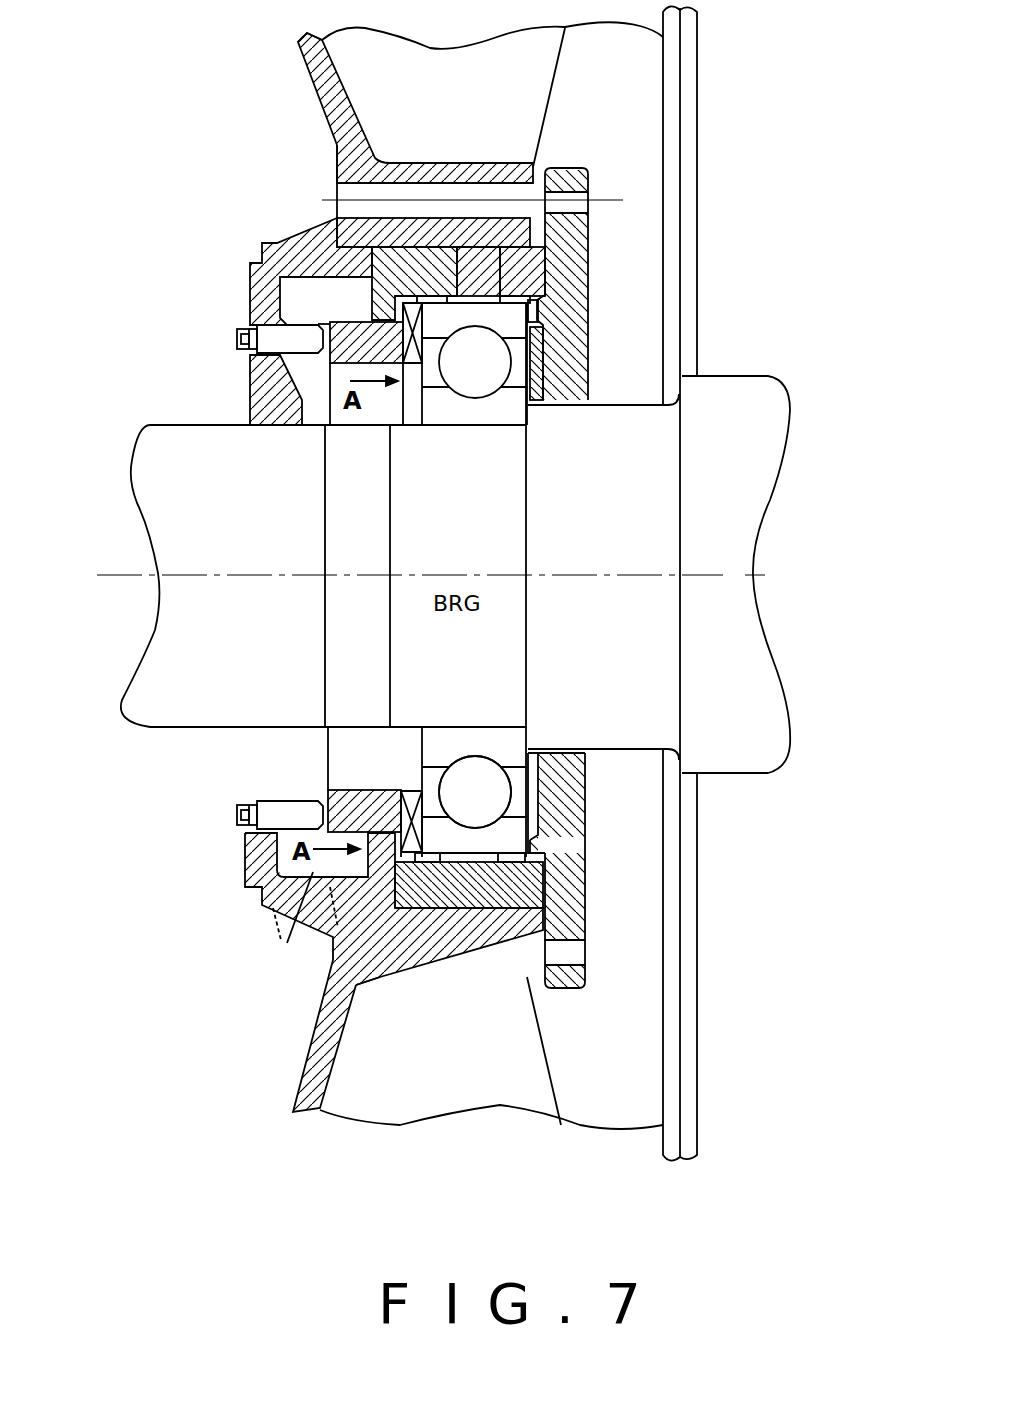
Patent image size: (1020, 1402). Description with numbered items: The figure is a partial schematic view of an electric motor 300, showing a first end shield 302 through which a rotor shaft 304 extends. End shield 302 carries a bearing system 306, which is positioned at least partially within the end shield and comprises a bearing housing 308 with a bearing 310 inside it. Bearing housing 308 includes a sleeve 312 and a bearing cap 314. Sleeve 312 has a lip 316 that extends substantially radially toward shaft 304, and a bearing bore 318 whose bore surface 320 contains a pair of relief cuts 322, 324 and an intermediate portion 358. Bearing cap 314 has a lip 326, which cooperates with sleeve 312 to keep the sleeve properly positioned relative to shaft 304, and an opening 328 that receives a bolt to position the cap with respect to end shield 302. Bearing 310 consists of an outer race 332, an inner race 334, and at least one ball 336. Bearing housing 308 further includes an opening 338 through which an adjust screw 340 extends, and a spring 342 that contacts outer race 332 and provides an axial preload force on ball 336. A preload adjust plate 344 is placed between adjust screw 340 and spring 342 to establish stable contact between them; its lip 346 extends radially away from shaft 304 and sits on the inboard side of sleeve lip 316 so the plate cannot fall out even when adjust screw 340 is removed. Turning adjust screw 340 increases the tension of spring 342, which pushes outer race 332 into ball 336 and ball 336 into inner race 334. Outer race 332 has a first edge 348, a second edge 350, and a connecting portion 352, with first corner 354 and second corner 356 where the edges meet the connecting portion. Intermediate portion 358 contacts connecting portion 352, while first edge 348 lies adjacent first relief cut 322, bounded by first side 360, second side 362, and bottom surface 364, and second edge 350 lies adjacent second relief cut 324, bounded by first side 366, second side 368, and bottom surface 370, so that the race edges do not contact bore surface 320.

The electric motor 300 is at (713, 147).
The first end shield 302 is at (588, 88).
The shaft 304 is at (208, 458).
The bearing system 306 is at (363, 243).
The bearing housing 308 is at (358, 170).
The bearing 310 is at (508, 405).
The sleeve 312 is at (432, 230).
The bearing cap 314 is at (590, 298).
The lip 316 is at (377, 312).
The bearing bore 318 is at (560, 322).
The bore surface 320 is at (548, 340).
The first relief cut 322 is at (395, 245).
The second relief cut 324 is at (497, 283).
The lip 326 is at (545, 317).
The opening 328 is at (573, 200).
The outer race 332 is at (410, 797).
The inner race 334 is at (442, 745).
The ball 336 is at (478, 758).
The opening 338 is at (238, 805).
The adjust screw 340 is at (247, 833).
The spring 342 is at (343, 803).
The preload adjust plate 344 is at (278, 830).
The lip 346 is at (340, 967).
The first edge 348 is at (447, 345).
The second edge 350 is at (600, 268).
The connecting portion 352 is at (462, 250).
The first corner 354 is at (492, 900).
The second corner 356 is at (530, 975).
The intermediate portion 358 is at (585, 805).
The first side 360 is at (392, 925).
The second side 362 is at (458, 925).
The bottom surface 364 is at (440, 925).
The first side 366 is at (553, 893).
The second side 368 is at (545, 855).
The bottom surface 370 is at (585, 887).